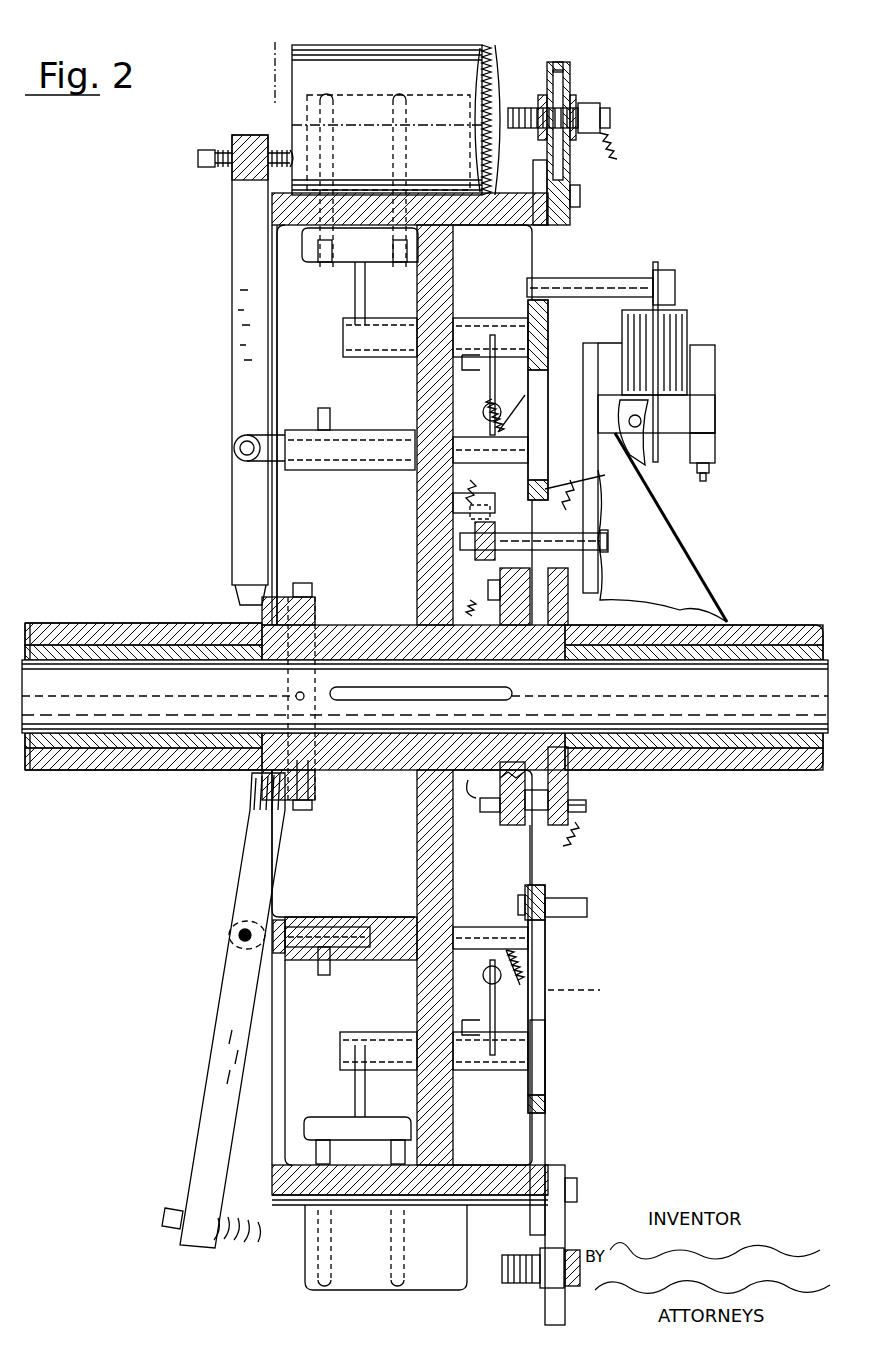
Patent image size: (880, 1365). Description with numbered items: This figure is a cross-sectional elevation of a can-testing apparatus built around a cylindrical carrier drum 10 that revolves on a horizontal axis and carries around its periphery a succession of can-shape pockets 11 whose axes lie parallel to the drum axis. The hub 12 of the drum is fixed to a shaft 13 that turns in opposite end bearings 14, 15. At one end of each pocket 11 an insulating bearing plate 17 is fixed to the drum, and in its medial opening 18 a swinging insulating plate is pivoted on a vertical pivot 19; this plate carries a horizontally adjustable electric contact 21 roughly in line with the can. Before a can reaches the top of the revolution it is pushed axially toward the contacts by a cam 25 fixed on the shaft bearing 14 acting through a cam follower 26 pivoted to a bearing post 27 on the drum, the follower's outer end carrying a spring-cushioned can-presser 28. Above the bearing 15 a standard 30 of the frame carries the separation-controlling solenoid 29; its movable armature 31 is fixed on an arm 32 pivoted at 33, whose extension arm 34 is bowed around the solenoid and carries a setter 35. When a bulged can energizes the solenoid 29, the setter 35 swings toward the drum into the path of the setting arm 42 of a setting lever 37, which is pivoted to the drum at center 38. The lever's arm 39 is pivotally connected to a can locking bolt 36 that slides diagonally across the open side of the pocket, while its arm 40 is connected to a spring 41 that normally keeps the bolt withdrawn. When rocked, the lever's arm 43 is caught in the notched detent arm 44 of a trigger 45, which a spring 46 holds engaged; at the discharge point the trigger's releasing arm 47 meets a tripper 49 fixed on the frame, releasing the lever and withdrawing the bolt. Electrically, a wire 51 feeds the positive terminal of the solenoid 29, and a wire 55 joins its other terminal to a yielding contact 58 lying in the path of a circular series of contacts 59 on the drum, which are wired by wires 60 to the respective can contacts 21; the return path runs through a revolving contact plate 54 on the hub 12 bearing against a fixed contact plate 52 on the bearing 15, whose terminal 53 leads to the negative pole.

The carrier drum 10 is at (425, 265).
The can-shape pocket 11 is at (505, 52).
The hub 12 is at (356, 625).
The shaft 13 is at (425, 696).
The shaft bearing 14 is at (143, 680).
The shaft bearing 15 is at (780, 625).
The insulating bearing plate 17 is at (570, 85).
The medial opening 18 is at (570, 95).
The vertical pivot 19 is at (550, 70).
The electric contact 21 is at (600, 110).
The cam 25 is at (290, 597).
The cam follower 26 is at (243, 372).
The bearing post 27 is at (340, 435).
The can-presser 28 is at (232, 163).
The separation-controlling solenoid 29 is at (654, 352).
The standard 30 is at (628, 505).
The movable armature 31 is at (695, 345).
The arm 32 is at (705, 420).
The pivot 33 is at (700, 473).
The extension arm 34 is at (658, 330).
The setter 35 is at (600, 285).
The can locking bolt 36 is at (398, 110).
The setting lever 37 is at (540, 340).
The center 38 is at (365, 310).
The arm 39 is at (352, 298).
The arm 40 is at (488, 368).
The spring 41 is at (495, 405).
The setting arm 42 is at (548, 310).
The arm 43 is at (548, 368).
The detent arm 44 is at (590, 991).
The trigger 45 is at (535, 448).
The spring 46 is at (515, 410).
The releasing arm 47 is at (540, 485).
The tripper 49 is at (570, 905).
The wire 51 is at (572, 845).
The contact plate 52 is at (568, 795).
The terminal 53 is at (586, 805).
The contact plate 54 is at (510, 825).
The wire 55 is at (548, 646).
The yielding contact 58 is at (500, 530).
The contact 59 is at (472, 495).
The wire 60 is at (600, 165).